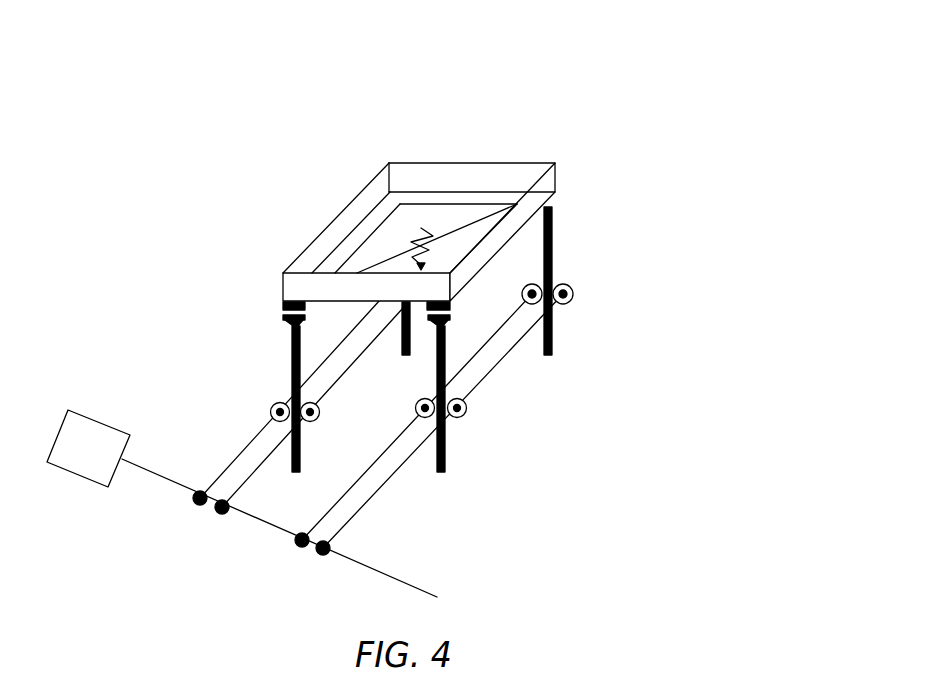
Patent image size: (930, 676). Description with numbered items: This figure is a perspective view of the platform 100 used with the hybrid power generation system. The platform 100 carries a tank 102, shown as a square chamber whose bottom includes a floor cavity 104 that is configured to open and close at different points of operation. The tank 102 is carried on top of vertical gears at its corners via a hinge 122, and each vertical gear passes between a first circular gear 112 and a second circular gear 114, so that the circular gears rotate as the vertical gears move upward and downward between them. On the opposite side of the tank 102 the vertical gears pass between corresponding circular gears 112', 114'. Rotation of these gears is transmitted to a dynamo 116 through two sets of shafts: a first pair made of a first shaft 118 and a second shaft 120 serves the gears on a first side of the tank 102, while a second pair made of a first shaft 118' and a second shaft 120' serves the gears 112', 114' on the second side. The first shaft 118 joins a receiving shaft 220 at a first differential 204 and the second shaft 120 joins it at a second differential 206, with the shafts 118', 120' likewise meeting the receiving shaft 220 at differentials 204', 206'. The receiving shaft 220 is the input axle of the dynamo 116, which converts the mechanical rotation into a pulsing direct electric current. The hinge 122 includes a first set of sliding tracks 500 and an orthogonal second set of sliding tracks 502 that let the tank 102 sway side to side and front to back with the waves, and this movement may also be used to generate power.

The platform 100 is at (489, 88).
The tank 102 is at (337, 214).
The floor cavity 104 is at (420, 225).
The first circular gear 112 is at (298, 387).
The first circular gear 112' is at (459, 339).
The second circular gear 114 is at (307, 447).
The second circular gear 114' is at (548, 386).
The dynamo 116 is at (87, 442).
The first shaft 118 is at (268, 399).
The first shaft 118' is at (417, 427).
The second shaft 120 is at (280, 407).
The second shaft 120' is at (443, 421).
The hinge 122 is at (423, 314).
The first differential 204 is at (177, 535).
The first differential 204' is at (277, 577).
The second differential 206 is at (208, 550).
The second differential 206' is at (312, 592).
The receiving shaft 220 is at (162, 485).
The first set of sliding tracks 500 is at (292, 292).
The second set of sliding tracks 502 is at (280, 304).